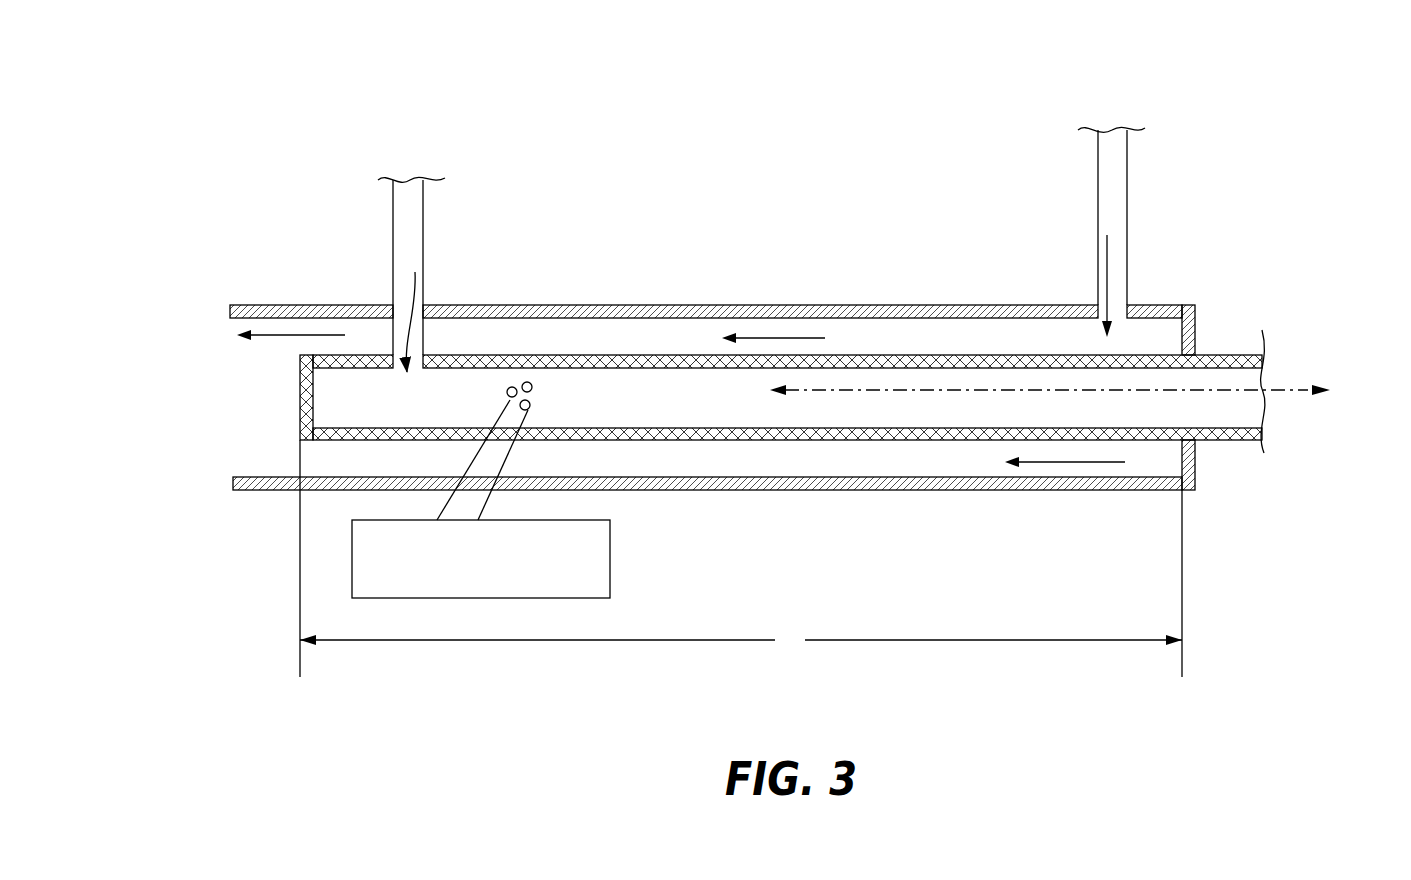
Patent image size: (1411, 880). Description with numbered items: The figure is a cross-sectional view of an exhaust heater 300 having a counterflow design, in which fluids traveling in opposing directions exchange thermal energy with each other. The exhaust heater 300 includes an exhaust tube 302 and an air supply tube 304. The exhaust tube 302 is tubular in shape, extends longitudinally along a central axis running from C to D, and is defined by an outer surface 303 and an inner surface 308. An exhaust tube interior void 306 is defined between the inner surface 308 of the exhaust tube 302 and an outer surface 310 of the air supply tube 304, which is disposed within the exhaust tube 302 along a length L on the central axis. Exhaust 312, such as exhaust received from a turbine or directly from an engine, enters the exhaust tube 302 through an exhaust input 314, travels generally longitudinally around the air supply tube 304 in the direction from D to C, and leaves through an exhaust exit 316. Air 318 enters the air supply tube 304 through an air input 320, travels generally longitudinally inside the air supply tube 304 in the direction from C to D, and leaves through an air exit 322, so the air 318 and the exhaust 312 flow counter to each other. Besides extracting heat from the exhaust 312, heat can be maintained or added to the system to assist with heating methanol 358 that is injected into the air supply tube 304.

The exhaust heater 300 is at (797, 110).
The exhaust tube 302 is at (882, 490).
The outer surface 303 is at (992, 490).
The air supply tube 304 is at (688, 352).
The exhaust tube interior void 306 is at (992, 338).
The inner surface 308 is at (847, 320).
The outer surface 310 is at (1032, 352).
The exhaust 312 is at (1110, 215).
The exhaust input 314 is at (1110, 150).
The exhaust exit 316 is at (252, 382).
The air 318 is at (410, 240).
The air input 320 is at (405, 200).
The air exit 322 is at (1247, 405).
The methanol 358 is at (591, 572).